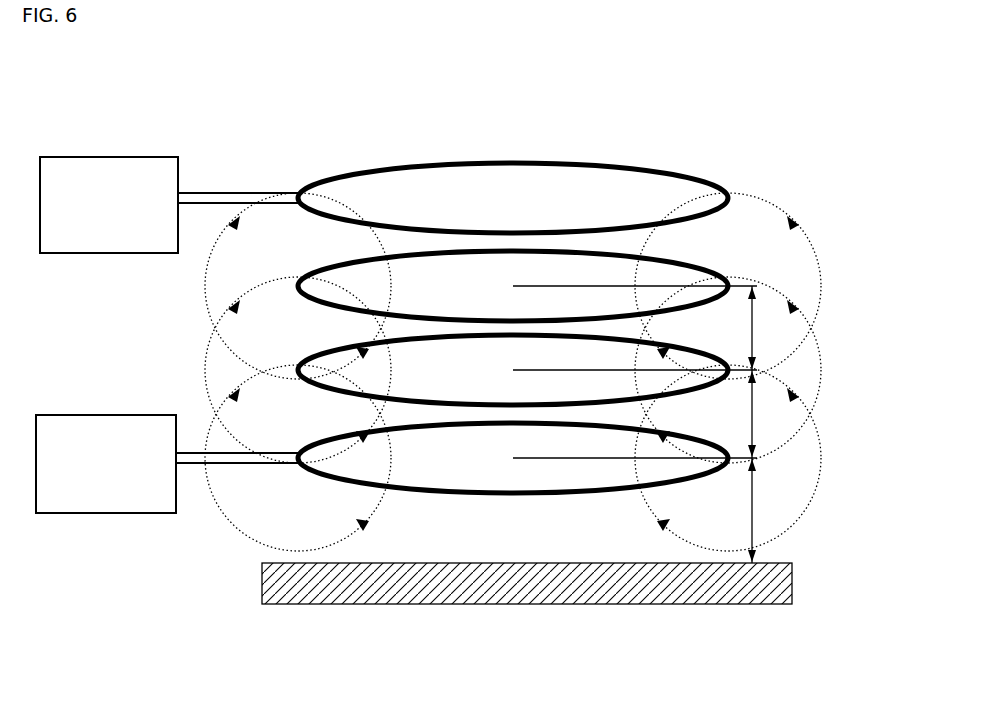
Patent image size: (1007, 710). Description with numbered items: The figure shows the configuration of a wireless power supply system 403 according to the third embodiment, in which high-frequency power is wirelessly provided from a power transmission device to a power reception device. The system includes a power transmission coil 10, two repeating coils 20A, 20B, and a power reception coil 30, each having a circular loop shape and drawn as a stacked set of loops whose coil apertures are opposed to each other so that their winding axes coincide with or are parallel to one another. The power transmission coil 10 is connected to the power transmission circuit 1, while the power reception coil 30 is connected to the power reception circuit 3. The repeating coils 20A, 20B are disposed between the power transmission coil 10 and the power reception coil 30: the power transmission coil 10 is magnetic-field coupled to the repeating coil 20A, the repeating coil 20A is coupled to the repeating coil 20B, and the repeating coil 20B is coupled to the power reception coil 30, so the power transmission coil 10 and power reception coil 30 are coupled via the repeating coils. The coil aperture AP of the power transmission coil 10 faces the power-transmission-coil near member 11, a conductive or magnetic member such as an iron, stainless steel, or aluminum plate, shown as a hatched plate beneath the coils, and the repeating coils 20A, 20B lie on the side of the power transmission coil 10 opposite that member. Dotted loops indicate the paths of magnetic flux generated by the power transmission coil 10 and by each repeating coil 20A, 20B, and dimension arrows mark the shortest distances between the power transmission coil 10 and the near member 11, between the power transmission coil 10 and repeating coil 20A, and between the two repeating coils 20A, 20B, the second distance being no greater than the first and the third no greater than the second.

The wireless power supply system 403 is at (767, 75).
The power transmission circuit 1 is at (110, 415).
The power reception circuit 3 is at (113, 157).
The power transmission coil 10 is at (303, 452).
The repeating coil 20A is at (303, 362).
The repeating coil 20B is at (303, 280).
The power reception coil 30 is at (302, 190).
The power-transmission-coil near member 11 is at (517, 594).
The coil aperture AP is at (499, 477).